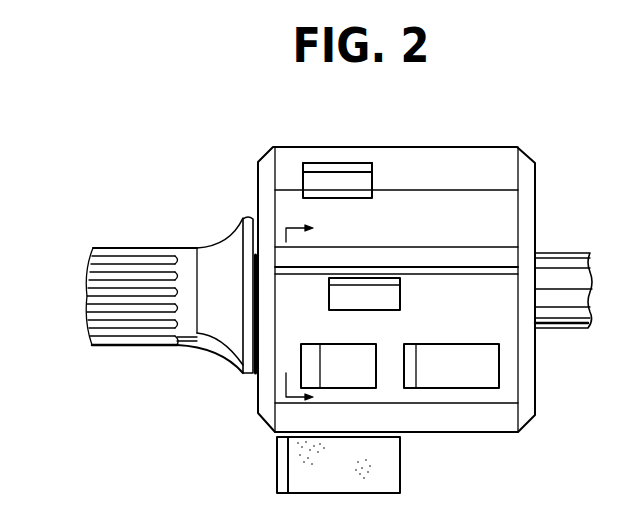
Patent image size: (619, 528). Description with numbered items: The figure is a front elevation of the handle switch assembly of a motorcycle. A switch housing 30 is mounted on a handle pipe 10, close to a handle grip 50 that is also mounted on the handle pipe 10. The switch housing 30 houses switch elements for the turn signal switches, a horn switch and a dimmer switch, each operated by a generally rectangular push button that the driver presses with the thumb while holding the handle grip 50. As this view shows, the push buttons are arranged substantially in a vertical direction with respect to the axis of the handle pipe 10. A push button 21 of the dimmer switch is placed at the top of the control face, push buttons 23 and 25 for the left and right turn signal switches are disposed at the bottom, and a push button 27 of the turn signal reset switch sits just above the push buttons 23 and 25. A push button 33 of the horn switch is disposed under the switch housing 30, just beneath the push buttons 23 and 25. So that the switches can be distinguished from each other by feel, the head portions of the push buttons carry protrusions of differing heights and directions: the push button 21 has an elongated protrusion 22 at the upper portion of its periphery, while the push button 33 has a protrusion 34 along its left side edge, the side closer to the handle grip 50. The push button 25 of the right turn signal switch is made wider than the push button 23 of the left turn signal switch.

The handle pipe 10 is at (558, 263).
The push button 21 is at (360, 180).
The elongated protrusion 22 is at (319, 163).
The push button 23 is at (340, 355).
The push button 25 is at (449, 353).
The push button 27 is at (387, 295).
The switch housing 30 is at (485, 147).
The push button 33 is at (388, 472).
The protrusion 34 is at (283, 461).
The handle grip 50 is at (218, 253).